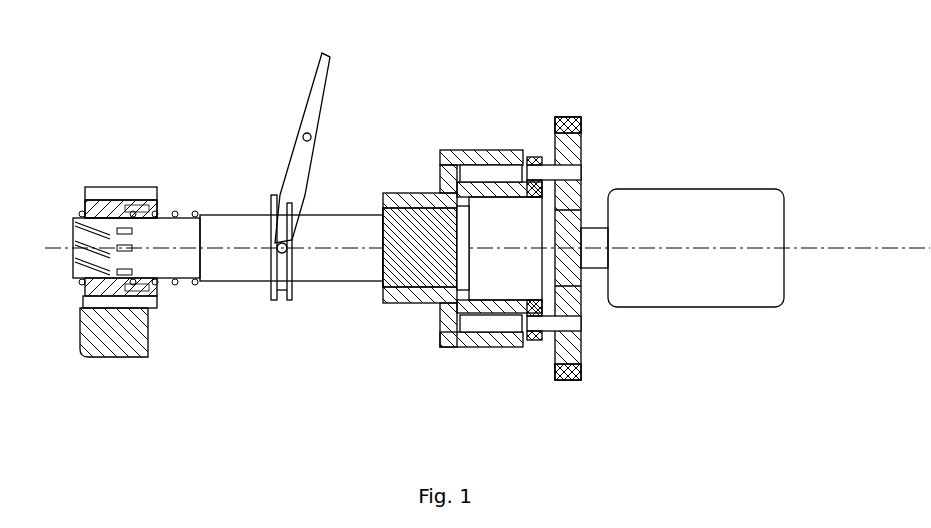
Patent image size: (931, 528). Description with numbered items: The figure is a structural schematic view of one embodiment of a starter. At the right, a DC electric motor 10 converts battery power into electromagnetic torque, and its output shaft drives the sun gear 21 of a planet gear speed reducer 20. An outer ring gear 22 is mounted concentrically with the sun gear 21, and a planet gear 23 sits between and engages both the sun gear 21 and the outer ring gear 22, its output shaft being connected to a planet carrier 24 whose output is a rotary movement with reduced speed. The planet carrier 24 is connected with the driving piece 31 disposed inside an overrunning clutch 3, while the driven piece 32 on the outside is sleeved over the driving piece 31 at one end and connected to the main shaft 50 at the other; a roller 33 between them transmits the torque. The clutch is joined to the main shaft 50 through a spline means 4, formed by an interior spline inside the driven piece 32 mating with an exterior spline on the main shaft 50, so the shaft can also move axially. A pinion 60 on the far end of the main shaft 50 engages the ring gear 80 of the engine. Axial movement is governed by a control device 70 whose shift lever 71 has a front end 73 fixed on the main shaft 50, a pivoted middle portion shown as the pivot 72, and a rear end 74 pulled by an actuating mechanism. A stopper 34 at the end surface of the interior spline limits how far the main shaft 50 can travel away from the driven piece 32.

The overrunning clutch 3 is at (474, 217).
The spline means 4 is at (385, 200).
The DC electric motor 10 is at (705, 200).
The planet gear speed reducer 20 is at (591, 222).
The sun gear 21 is at (583, 257).
The outer ring gear 22 is at (583, 122).
The planet gear 23 is at (583, 157).
The planet carrier 24 is at (537, 158).
The driving piece 31 is at (505, 248).
The driven piece 32 is at (461, 152).
The roller 33 is at (498, 166).
The stopper 34 is at (472, 268).
The main shaft 50 is at (336, 281).
The pinion 60 is at (118, 205).
The control device 70 is at (302, 132).
The shift lever 71 is at (306, 118).
The pivot pin 72 is at (302, 137).
The front end 73 is at (289, 245).
The rear end 74 is at (332, 57).
The ring gear 80 is at (138, 344).